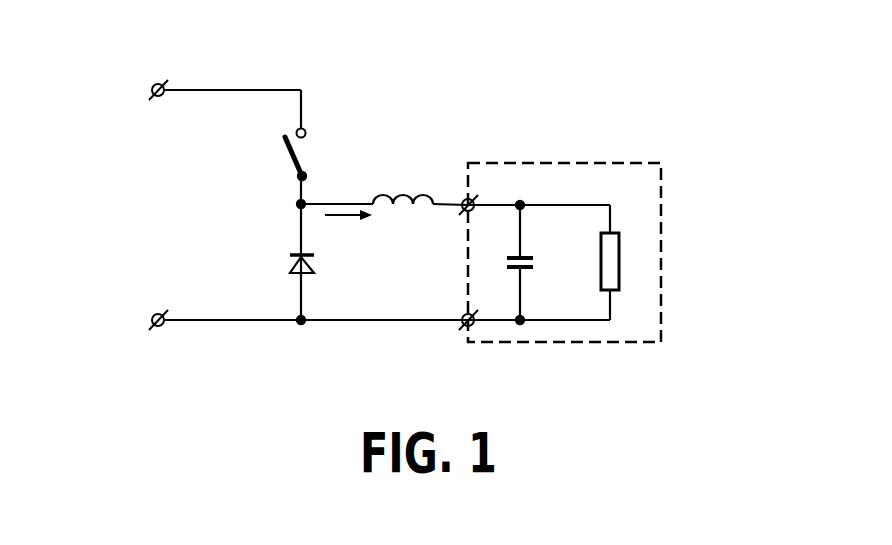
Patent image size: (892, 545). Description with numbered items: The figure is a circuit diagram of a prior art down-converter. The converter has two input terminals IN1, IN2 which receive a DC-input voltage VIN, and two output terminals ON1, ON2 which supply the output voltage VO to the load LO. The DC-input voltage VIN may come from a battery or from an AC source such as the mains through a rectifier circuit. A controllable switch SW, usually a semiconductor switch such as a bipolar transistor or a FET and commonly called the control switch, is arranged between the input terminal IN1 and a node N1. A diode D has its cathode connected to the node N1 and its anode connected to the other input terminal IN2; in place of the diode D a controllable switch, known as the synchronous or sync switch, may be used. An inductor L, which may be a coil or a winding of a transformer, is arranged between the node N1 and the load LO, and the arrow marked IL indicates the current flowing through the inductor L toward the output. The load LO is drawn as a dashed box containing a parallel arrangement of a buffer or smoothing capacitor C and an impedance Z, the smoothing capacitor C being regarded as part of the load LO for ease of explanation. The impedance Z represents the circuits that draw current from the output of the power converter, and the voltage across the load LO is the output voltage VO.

The input terminal IN1 is at (149, 76).
The input terminal IN2 is at (151, 336).
The DC-input voltage VIN is at (125, 195).
The controllable switch SW is at (273, 155).
The node N1 is at (303, 202).
The inductor L is at (403, 187).
The inductor current IL is at (348, 228).
The diode D is at (289, 264).
The output terminal ON1 is at (462, 198).
The output terminal ON2 is at (460, 325).
The output voltage VO is at (525, 202).
The smoothing capacitor C is at (508, 262).
The impedance Z is at (622, 262).
The load LO is at (662, 163).